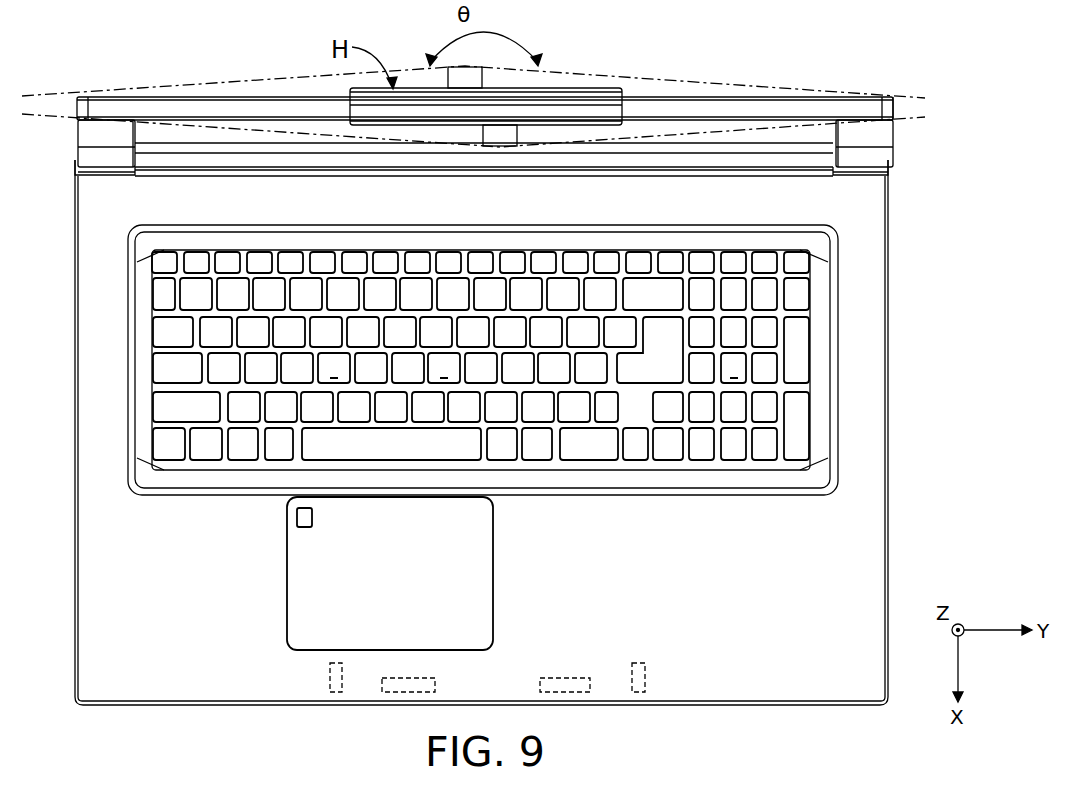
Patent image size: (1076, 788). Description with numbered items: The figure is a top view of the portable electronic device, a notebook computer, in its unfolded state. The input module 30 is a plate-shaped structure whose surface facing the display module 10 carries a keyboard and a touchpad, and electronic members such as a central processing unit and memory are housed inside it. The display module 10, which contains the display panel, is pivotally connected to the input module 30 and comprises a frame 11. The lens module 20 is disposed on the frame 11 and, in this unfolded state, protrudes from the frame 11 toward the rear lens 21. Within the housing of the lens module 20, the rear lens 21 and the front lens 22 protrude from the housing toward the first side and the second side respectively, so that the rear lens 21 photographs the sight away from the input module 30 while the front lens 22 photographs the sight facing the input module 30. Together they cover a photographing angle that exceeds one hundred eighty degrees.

The display module 10 is at (841, 86).
The frame 11 is at (895, 110).
The lens module 20 is at (515, 121).
The rear lens 21 is at (478, 80).
The front lens 22 is at (500, 138).
The input module 30 is at (873, 352).